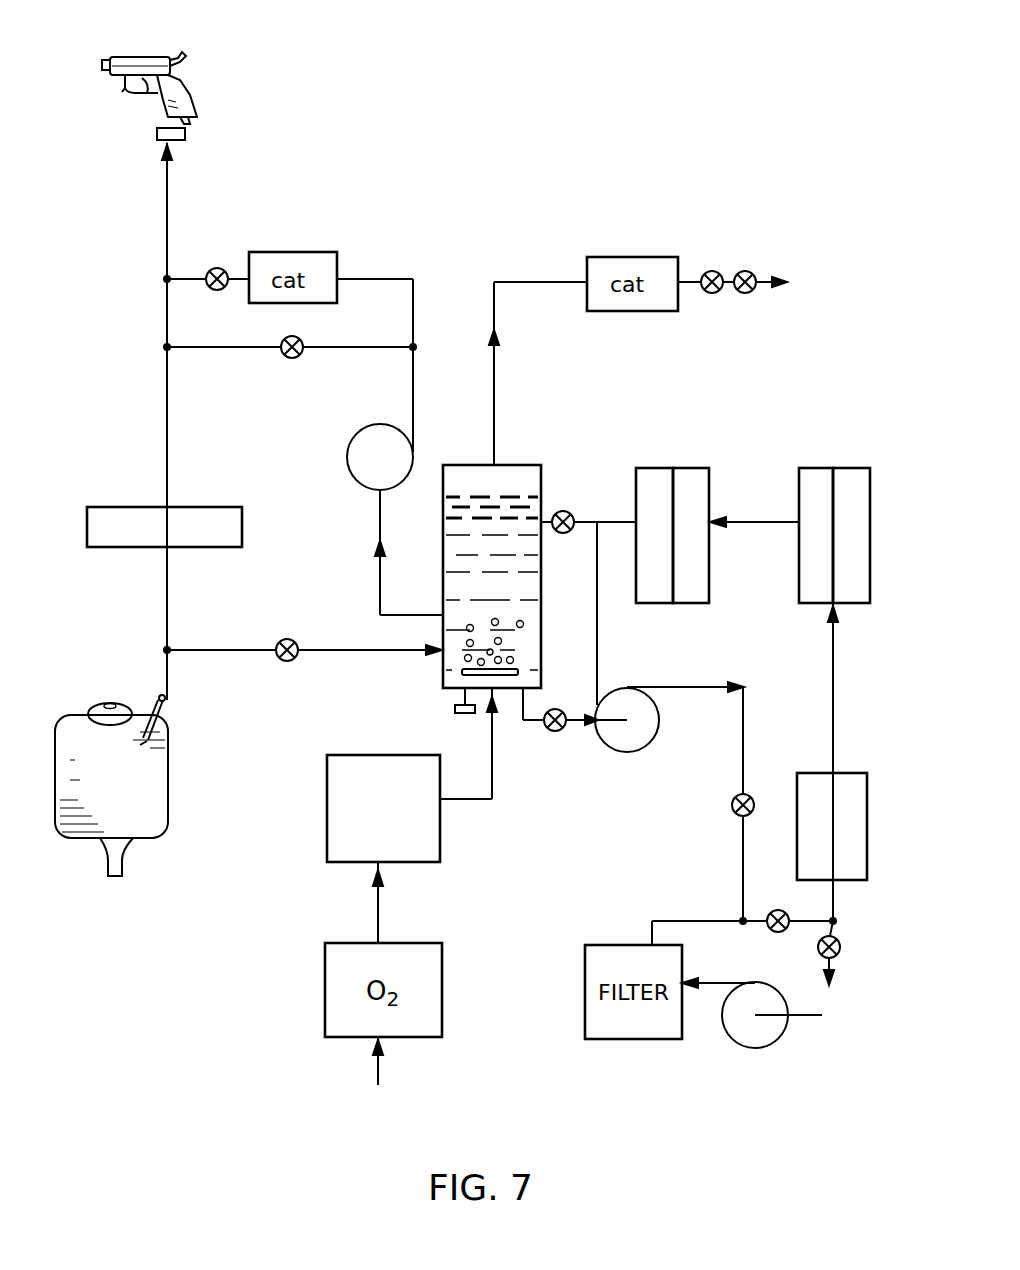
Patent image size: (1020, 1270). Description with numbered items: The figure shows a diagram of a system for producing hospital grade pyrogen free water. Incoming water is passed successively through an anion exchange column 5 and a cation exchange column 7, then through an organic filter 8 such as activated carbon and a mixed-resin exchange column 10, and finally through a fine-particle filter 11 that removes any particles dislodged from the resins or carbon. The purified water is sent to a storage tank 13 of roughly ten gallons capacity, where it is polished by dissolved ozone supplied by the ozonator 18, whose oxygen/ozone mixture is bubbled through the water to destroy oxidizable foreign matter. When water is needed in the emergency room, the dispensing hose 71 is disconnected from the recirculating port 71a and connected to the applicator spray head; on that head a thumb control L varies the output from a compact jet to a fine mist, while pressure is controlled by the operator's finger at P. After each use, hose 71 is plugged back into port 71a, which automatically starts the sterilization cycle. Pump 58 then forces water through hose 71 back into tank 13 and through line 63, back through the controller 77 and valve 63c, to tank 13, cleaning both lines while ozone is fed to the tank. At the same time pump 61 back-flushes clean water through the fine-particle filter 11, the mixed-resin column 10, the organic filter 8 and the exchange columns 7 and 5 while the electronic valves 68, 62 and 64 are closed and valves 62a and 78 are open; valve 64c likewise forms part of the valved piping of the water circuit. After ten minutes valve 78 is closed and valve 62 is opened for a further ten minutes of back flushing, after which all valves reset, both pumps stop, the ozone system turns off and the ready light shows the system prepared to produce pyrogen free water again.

The thumb control L is at (185, 55).
The finger pressure control P is at (130, 93).
The dispensing hose 71 is at (168, 205).
The valve 64c is at (217, 267).
The line 63 is at (165, 430).
The controller 77 is at (228, 535).
The pump 58 is at (360, 440).
The storage tank 13 is at (496, 505).
The valve 63c is at (277, 662).
The recirculating port 71a is at (455, 720).
The ozonator 18 is at (345, 822).
The valve 62a is at (553, 732).
The pump 61 is at (628, 740).
The electronic valve 68 is at (573, 513).
The fine-particle filter 11 is at (660, 468).
The mixed-resin exchange column 10 is at (700, 468).
The organic filter 8 is at (820, 468).
The cation exchange column 7 is at (852, 468).
The electronic valve 62 is at (748, 795).
The anion exchange column 5 is at (856, 773).
The electronic valve 64 is at (774, 910).
The valve 78 is at (820, 952).